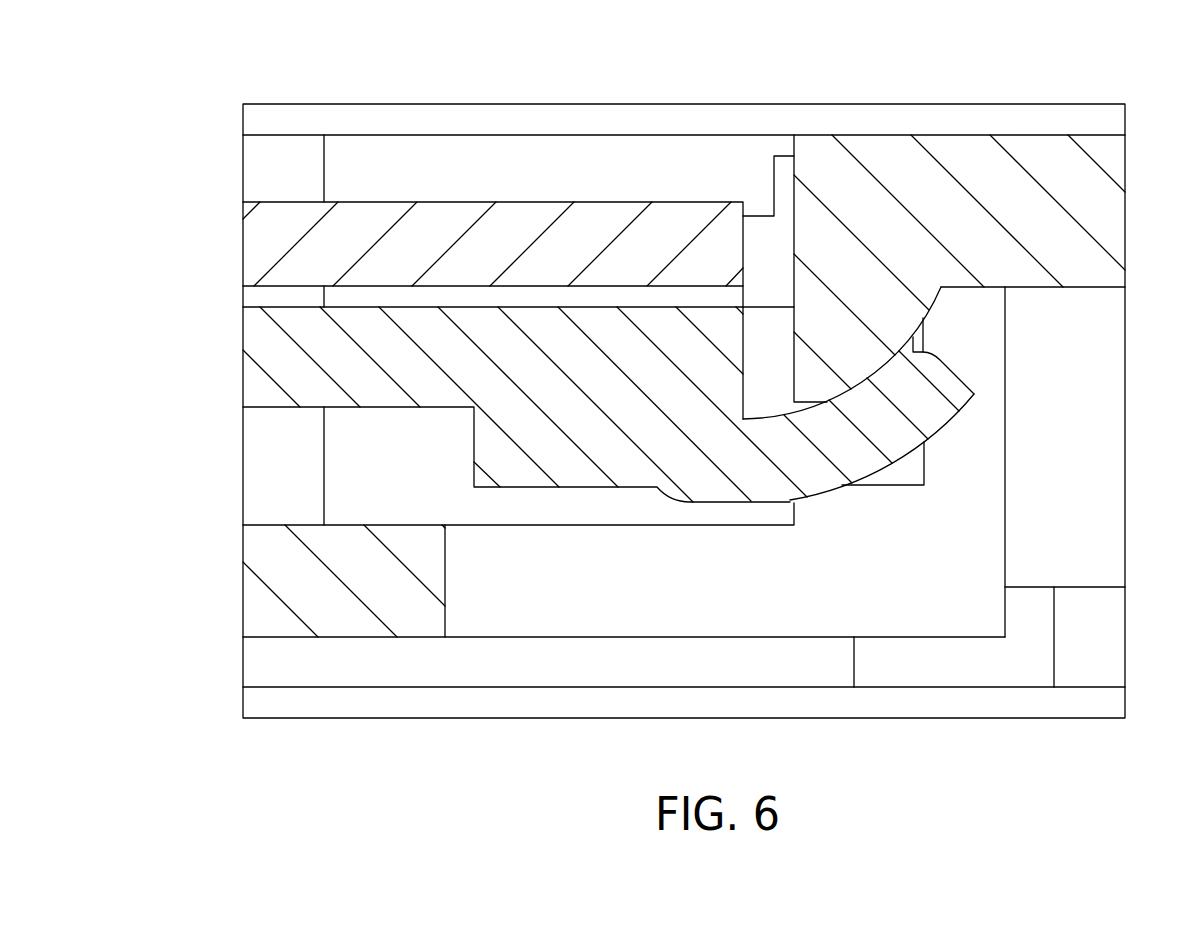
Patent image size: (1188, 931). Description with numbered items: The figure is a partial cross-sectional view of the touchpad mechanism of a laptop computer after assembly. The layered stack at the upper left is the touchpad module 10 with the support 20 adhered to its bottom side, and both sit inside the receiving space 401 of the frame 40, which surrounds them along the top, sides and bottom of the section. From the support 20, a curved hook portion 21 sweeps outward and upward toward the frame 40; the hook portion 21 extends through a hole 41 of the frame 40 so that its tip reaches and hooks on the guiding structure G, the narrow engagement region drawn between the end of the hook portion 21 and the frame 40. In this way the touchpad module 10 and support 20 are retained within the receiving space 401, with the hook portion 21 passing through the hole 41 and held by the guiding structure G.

The touchpad module 10 is at (469, 198).
The support 20 is at (381, 412).
The hook portion 21 is at (857, 453).
The frame 40 is at (958, 133).
The receiving space 401 is at (270, 463).
The hole 41 is at (557, 548).
The guiding structure G is at (925, 330).